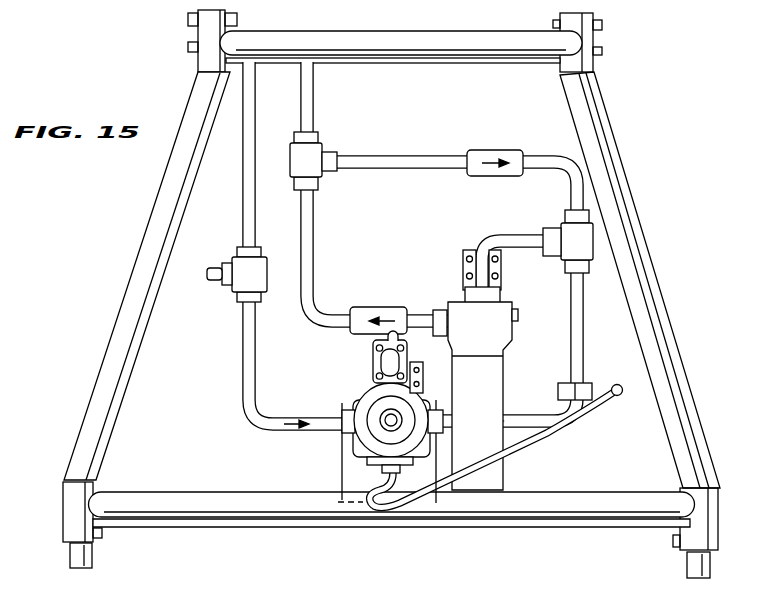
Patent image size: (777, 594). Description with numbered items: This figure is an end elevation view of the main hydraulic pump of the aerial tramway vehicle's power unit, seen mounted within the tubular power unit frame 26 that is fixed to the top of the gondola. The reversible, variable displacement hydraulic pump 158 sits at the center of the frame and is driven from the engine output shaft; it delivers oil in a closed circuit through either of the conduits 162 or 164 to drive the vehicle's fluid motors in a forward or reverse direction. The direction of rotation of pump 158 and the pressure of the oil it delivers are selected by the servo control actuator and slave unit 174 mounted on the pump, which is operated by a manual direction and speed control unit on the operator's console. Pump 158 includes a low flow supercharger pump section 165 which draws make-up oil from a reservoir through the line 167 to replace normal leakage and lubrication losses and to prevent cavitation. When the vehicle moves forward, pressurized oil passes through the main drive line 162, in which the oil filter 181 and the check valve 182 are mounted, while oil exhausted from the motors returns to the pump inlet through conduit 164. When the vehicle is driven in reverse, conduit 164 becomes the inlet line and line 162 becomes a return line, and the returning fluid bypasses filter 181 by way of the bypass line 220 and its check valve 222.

The power unit frame 26 is at (640, 231).
The hydraulic pump 158 is at (358, 392).
The conduit 162 is at (310, 227).
The conduit 164 is at (242, 231).
The supercharger pump section 165 is at (377, 431).
The line 167 is at (544, 455).
The servo control actuator and slave unit 174 is at (376, 350).
The oil filter 181 is at (492, 337).
The check valve 182 is at (404, 306).
The bypass line 220 is at (417, 156).
The check valve 222 is at (505, 152).